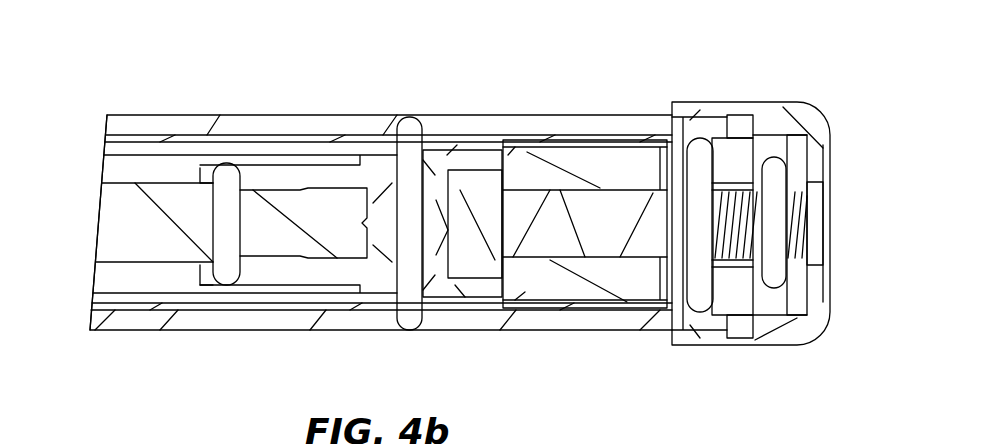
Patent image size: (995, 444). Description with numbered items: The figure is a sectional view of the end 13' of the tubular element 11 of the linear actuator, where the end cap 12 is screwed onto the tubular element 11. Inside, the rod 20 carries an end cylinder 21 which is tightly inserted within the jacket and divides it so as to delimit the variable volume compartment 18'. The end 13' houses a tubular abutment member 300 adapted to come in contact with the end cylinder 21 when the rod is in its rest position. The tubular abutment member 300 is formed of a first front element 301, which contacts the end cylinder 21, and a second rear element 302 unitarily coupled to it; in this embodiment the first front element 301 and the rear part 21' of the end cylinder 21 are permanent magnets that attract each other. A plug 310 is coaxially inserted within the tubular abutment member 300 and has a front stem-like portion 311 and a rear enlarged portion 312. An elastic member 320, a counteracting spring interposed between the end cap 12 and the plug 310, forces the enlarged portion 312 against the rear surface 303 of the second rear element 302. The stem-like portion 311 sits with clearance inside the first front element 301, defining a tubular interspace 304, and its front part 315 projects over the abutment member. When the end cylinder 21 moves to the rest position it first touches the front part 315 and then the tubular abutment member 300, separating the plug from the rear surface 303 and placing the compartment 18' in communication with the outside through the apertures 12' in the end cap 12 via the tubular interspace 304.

The end of the tubular element 13' is at (131, 222).
The first variable volume compartment 18' is at (245, 173).
The tubular element 11 is at (283, 115).
The rod 20 is at (128, 235).
The end cylinder 21 is at (462, 183).
The rear part of the end cylinder 21' is at (492, 159).
The tubular abutment member 300 is at (623, 117).
The first front element 301 is at (527, 158).
The tubular interspace 304 is at (565, 200).
The front stem-like portion 311 is at (562, 212).
The front part of the stem-like portion 315 is at (503, 220).
The plug 310 is at (602, 268).
The second rear element 302 is at (676, 290).
The rear surface 303 is at (708, 150).
The elastic member 320 is at (740, 292).
The rear enlarged portion 312 is at (797, 272).
The end cap 12 is at (757, 190).
The apertures 12' is at (824, 225).